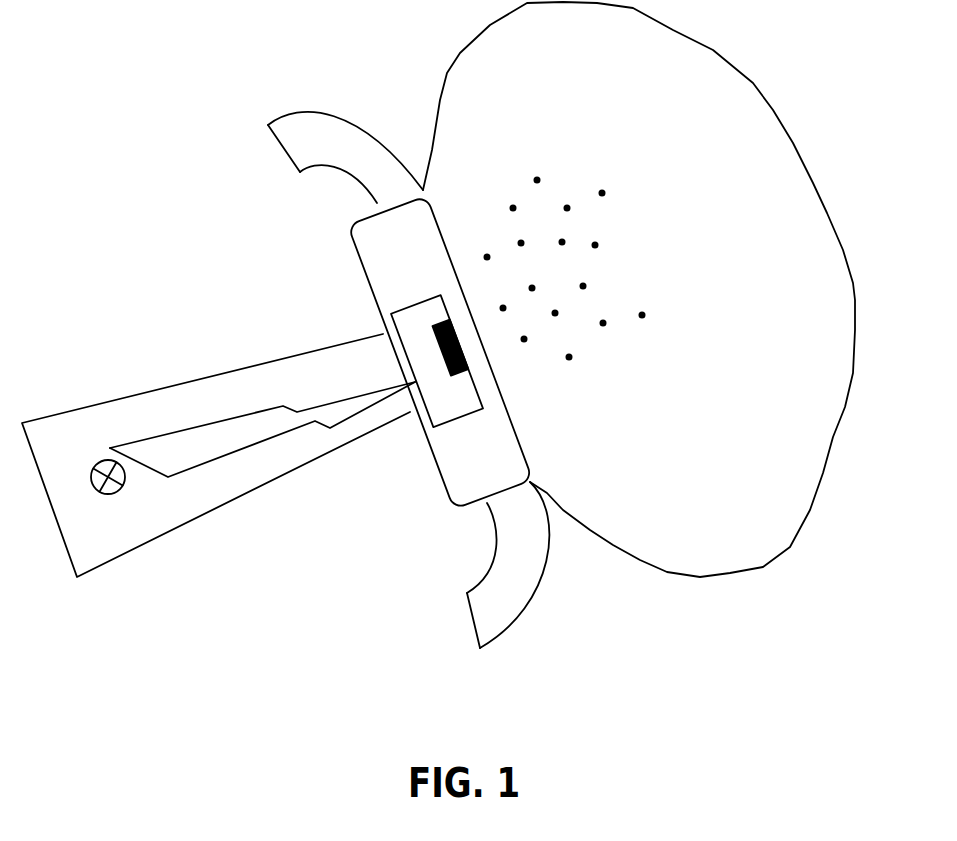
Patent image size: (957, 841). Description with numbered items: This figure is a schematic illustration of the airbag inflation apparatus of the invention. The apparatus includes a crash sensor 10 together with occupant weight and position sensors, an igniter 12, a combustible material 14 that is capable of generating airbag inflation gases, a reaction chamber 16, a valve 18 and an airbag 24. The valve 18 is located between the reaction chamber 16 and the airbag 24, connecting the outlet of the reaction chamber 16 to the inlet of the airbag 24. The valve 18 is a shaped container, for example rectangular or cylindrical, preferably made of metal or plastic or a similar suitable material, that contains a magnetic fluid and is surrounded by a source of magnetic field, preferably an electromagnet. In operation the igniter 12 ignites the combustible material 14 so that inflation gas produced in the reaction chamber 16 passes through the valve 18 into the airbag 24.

The crash sensor 10 is at (97, 463).
The igniter 12 is at (233, 418).
The combustible material 14 is at (629, 342).
The reaction chamber 16 is at (415, 303).
The valve 18 is at (462, 370).
The airbag 24 is at (758, 85).